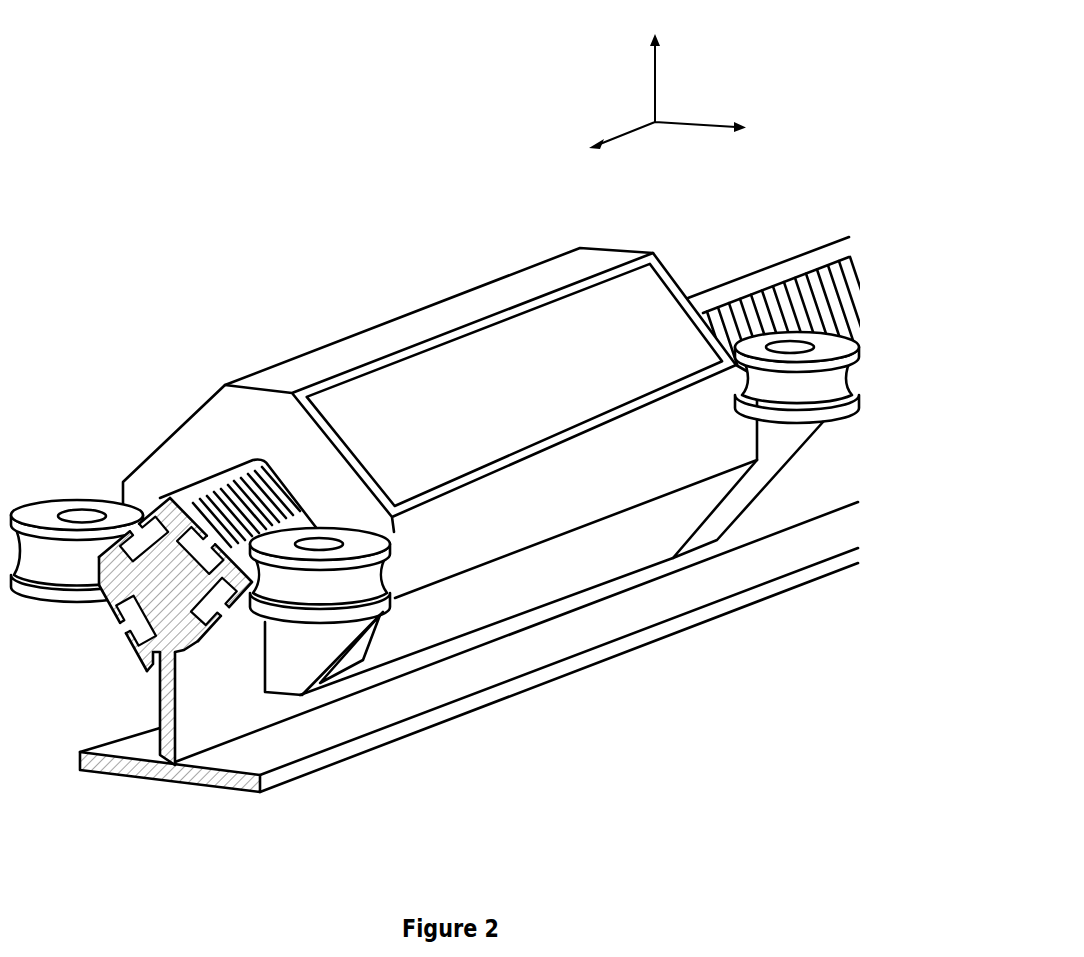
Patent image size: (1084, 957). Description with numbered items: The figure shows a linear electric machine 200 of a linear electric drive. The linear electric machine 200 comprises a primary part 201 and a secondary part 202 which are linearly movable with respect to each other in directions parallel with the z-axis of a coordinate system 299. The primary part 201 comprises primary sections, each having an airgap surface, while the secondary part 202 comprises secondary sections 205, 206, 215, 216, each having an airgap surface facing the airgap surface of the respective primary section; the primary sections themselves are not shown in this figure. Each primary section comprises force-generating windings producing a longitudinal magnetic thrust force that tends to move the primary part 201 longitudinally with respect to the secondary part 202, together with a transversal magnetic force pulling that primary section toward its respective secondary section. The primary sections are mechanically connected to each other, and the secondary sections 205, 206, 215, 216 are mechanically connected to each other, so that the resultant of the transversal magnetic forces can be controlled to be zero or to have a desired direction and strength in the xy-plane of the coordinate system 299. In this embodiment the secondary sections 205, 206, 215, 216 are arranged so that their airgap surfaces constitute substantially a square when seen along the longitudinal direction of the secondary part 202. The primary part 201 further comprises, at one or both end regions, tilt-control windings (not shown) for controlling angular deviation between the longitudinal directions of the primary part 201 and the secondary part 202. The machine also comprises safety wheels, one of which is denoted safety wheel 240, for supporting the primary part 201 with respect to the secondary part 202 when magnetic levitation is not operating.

The linear electric machine 200 is at (338, 270).
The primary part 201 is at (393, 330).
The secondary part 202 is at (732, 294).
The secondary section 205 is at (147, 520).
The secondary section 206 is at (133, 528).
The secondary section 215 is at (135, 602).
The secondary section 216 is at (205, 623).
The safety wheel 240 is at (378, 572).
The coordinate system 299 is at (714, 90).